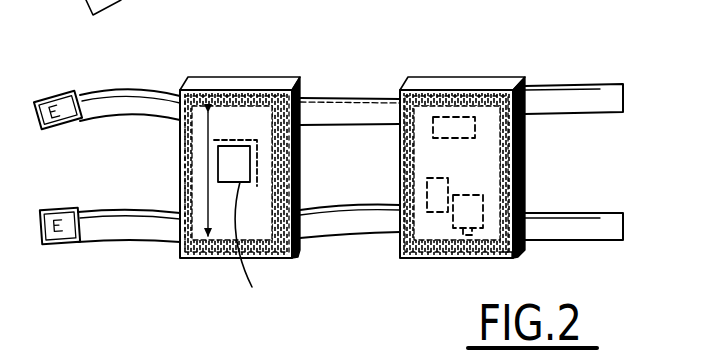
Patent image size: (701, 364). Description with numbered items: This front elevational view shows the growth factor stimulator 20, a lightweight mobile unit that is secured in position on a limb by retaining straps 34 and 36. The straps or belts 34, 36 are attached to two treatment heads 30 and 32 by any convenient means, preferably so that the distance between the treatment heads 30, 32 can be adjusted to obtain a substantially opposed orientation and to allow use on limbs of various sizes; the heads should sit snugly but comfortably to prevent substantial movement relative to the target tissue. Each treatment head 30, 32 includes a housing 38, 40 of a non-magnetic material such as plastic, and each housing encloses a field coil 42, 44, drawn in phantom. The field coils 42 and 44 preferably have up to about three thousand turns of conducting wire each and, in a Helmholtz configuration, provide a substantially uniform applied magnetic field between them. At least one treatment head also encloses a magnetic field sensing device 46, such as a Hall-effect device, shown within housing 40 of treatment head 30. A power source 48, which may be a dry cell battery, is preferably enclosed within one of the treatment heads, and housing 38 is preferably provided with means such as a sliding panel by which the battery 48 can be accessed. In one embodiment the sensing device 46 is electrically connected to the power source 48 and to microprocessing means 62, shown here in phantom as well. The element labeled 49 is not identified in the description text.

The growth factor stimulator 20 is at (344, 40).
The treatment head 30 is at (222, 72).
The treatment head 32 is at (472, 73).
The retaining strap 34 is at (107, 90).
The retaining strap 36 is at (115, 239).
The housing 38 is at (525, 167).
The housing 40 is at (295, 162).
The field coil 42 is at (505, 258).
The field coil 44 is at (181, 147).
The magnetic field sensing device 46 is at (264, 240).
The power source 48 is at (434, 117).
The lower pocket 49 is at (427, 207).
The microprocessing means 62 is at (441, 266).